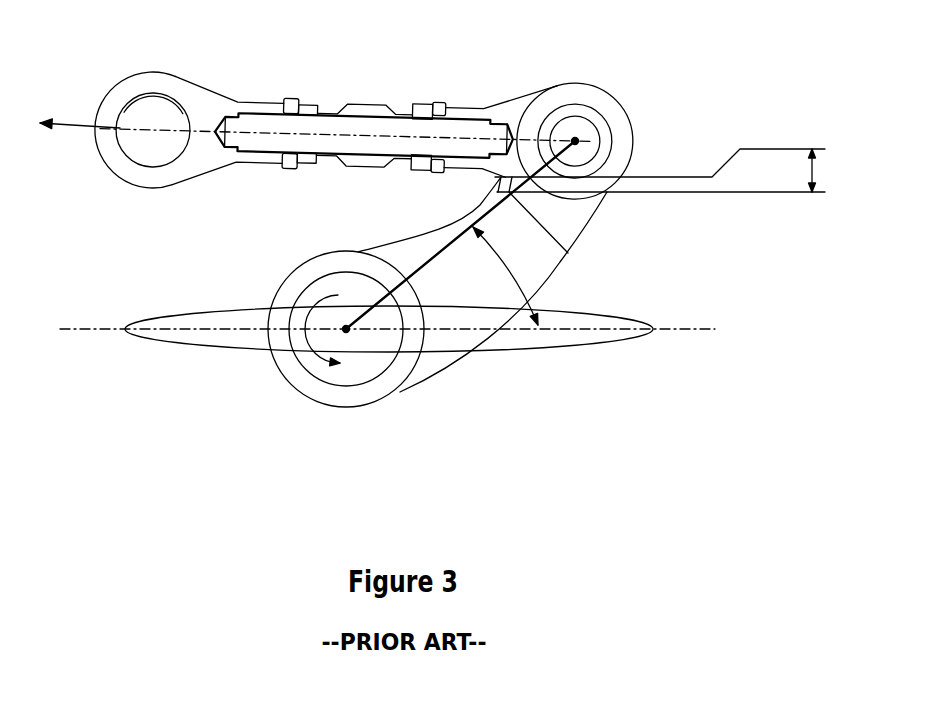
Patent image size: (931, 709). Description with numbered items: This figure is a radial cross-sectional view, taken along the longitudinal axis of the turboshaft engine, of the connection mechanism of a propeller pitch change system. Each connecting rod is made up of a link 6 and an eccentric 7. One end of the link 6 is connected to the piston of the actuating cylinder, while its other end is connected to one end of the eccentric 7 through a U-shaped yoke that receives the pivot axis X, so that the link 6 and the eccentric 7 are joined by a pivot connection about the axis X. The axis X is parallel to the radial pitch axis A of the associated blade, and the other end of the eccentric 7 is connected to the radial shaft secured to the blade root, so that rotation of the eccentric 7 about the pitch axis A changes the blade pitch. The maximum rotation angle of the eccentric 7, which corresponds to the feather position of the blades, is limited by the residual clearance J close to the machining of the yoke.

The link 6 is at (373, 75).
The eccentric 7 is at (567, 224).
The axis of the pivot connection X is at (575, 141).
The radial axis of pitch A is at (347, 333).
The residual clearance J is at (819, 170).